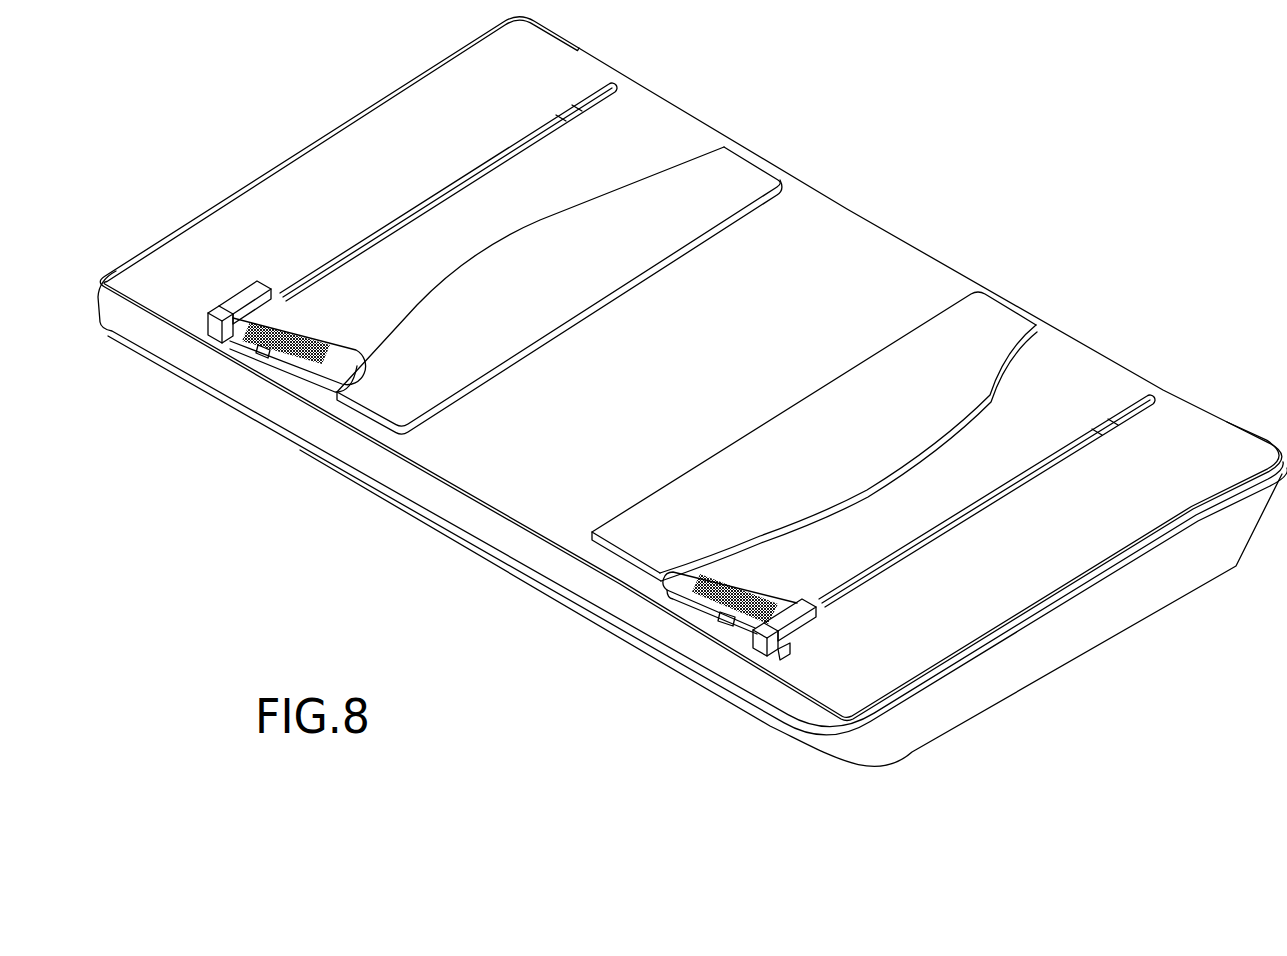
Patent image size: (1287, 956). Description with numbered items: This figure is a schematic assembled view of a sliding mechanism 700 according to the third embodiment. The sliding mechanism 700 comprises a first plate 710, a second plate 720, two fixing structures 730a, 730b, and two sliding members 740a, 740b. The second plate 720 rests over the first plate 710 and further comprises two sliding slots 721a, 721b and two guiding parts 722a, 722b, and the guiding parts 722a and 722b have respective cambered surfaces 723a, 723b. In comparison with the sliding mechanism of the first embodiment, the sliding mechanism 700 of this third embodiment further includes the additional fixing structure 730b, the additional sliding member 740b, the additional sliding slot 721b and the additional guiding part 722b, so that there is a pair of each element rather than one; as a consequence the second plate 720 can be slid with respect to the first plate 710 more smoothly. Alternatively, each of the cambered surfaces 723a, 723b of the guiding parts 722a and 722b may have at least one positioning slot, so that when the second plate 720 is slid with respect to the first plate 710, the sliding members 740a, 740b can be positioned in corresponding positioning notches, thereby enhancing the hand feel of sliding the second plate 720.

The sliding mechanism 700 is at (1035, 84).
The first plate 710 is at (1178, 572).
The second plate 720 is at (885, 247).
The sliding slot 721a is at (497, 160).
The sliding slot 721b is at (967, 525).
The guiding part 722a is at (558, 290).
The guiding part 722b is at (831, 436).
The cambered surface 723a is at (388, 332).
The cambered surface 723b is at (1010, 357).
The fixing structure 730a is at (232, 312).
The fixing structure 730b is at (800, 640).
The sliding member 740a is at (316, 314).
The sliding member 740b is at (765, 574).